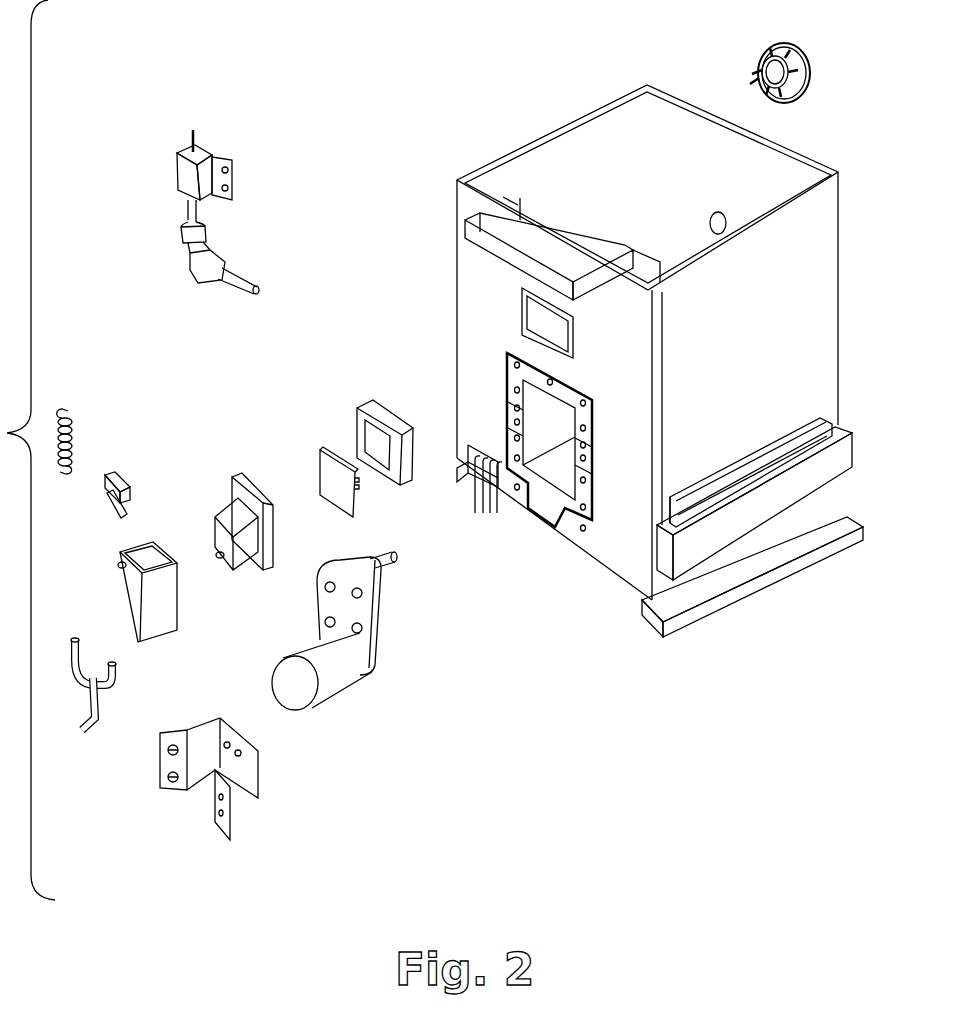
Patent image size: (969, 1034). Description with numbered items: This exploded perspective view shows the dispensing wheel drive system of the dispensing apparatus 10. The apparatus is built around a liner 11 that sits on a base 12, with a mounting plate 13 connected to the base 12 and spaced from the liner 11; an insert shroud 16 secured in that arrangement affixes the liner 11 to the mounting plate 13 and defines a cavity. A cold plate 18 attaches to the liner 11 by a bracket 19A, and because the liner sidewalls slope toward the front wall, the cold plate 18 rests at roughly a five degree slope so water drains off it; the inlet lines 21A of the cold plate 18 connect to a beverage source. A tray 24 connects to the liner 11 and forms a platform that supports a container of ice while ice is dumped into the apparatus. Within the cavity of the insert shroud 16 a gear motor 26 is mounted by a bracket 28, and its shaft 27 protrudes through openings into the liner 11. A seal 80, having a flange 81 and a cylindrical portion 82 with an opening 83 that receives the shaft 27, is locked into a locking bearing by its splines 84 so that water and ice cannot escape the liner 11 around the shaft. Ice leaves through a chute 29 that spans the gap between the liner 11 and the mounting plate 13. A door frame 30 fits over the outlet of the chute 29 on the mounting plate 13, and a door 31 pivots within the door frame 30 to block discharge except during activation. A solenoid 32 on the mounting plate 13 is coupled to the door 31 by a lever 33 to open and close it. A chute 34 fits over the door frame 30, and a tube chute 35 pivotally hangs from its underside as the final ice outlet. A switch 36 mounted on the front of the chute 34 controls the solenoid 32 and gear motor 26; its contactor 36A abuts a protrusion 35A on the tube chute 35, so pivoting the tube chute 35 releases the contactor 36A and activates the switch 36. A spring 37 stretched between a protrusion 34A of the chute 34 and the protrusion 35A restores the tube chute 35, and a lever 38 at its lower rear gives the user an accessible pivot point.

The dispensing apparatus 10 is at (668, 440).
The liner 11 is at (765, 385).
The base 12 is at (830, 522).
The mounting plate 13 is at (633, 452).
The insert shroud 16 is at (563, 439).
The cold plate 18 is at (855, 437).
The bracket 19A is at (763, 450).
The inlet lines 21A is at (482, 545).
The tray 24 is at (537, 248).
The gear motor 26 is at (349, 659).
The shaft 27 is at (397, 565).
The bracket 28 is at (240, 797).
The chute 29 is at (550, 327).
The door frame 30 is at (385, 418).
The door 31 is at (333, 485).
The solenoid 32 is at (197, 143).
The lever 33 is at (182, 240).
The chute 34 is at (275, 518).
The protrusion 34A is at (220, 558).
The tube chute 35 is at (158, 627).
The protrusion 35A is at (118, 566).
The switch 36 is at (115, 475).
The contactor 36A is at (125, 517).
The spring 37 is at (77, 432).
The lever 38 is at (95, 727).
The seal 80 is at (790, 69).
The flange 81 is at (805, 62).
The cylindrical portion 82 is at (757, 78).
The opening 83 is at (783, 102).
The splines 84 is at (778, 52).